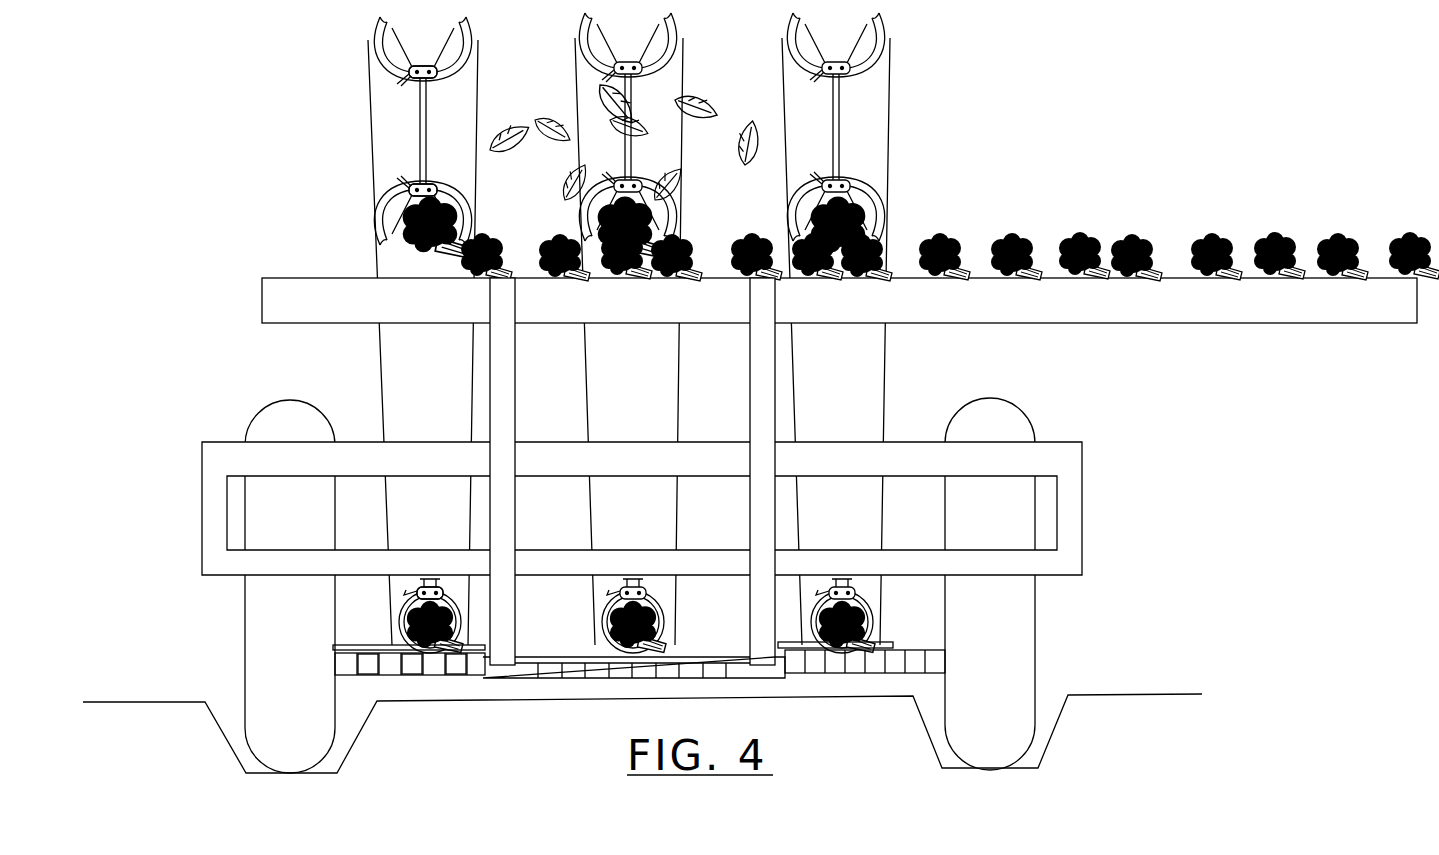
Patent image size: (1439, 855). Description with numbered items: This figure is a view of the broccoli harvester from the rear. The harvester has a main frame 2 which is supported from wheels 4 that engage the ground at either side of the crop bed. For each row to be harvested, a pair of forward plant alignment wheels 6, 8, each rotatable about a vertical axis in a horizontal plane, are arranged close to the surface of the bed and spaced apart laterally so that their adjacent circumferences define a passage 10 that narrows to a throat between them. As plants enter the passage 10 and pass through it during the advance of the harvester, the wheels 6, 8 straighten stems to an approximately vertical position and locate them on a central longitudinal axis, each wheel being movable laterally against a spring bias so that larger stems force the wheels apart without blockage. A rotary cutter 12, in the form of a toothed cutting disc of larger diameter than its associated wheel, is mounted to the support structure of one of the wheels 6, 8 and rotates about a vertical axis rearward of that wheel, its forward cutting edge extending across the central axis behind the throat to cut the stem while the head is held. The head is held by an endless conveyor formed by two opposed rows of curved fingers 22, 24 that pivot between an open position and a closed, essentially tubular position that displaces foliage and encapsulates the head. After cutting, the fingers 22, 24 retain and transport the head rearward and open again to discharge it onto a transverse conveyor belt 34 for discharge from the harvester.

The main frame 2 is at (1080, 452).
The wheels 4 is at (257, 668).
The forward plant alignment wheel 6 is at (372, 663).
The forward plant alignment wheel 8 is at (462, 665).
The passage 10 is at (425, 664).
The rotary cutter 12 is at (352, 640).
The curved fingers 22 is at (373, 207).
The curved fingers 24 is at (473, 203).
The transverse conveyor belt 34 is at (1240, 297).